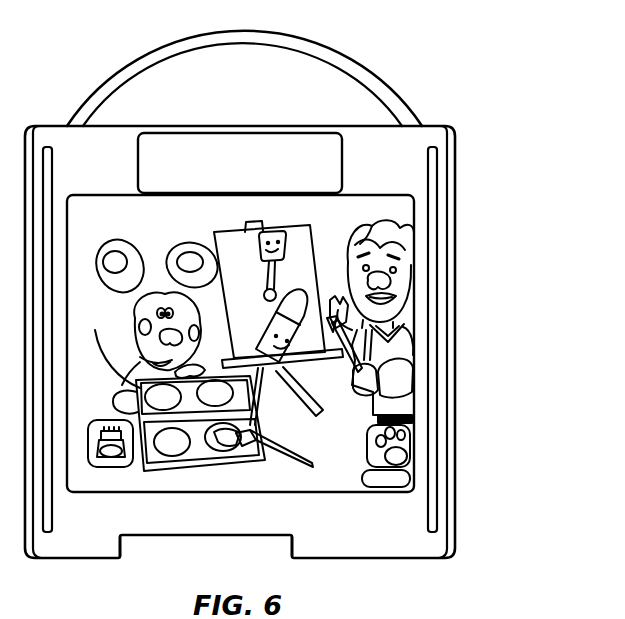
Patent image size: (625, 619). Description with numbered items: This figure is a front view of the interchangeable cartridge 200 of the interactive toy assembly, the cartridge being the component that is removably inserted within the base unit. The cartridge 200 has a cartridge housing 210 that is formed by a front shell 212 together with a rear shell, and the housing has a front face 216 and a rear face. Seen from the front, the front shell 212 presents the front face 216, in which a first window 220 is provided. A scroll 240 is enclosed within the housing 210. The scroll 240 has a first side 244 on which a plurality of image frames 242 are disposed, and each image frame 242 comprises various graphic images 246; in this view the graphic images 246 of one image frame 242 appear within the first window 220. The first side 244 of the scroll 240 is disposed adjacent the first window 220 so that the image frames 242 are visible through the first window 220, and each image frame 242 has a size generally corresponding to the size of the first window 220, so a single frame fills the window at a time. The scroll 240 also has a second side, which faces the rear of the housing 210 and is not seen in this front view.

The interchangeable cartridge 200 is at (419, 55).
The cartridge housing 210 is at (430, 126).
The front shell 212 is at (407, 172).
The front face 216 is at (409, 535).
The first window 220 is at (399, 216).
The scroll 240 is at (353, 222).
The image frame 242 is at (140, 229).
The first side 244 is at (358, 453).
The graphic images 246 is at (253, 247).